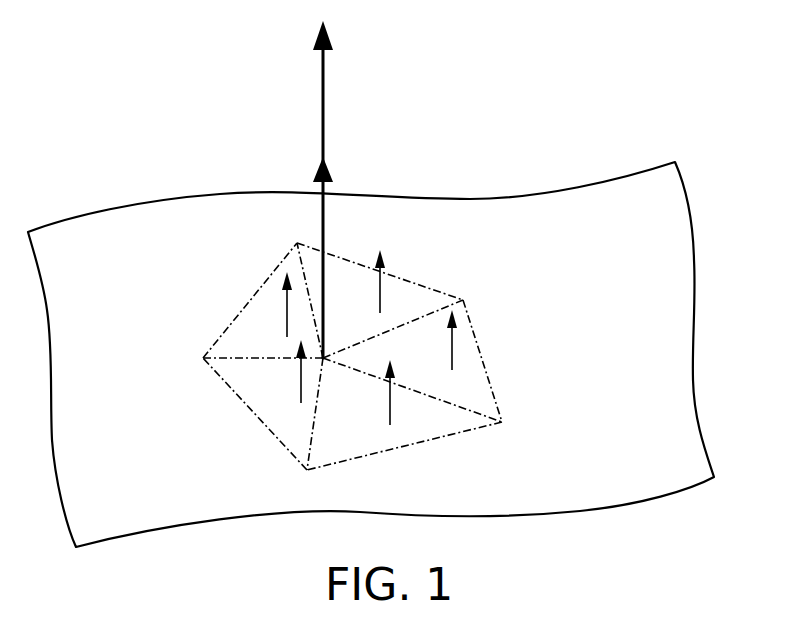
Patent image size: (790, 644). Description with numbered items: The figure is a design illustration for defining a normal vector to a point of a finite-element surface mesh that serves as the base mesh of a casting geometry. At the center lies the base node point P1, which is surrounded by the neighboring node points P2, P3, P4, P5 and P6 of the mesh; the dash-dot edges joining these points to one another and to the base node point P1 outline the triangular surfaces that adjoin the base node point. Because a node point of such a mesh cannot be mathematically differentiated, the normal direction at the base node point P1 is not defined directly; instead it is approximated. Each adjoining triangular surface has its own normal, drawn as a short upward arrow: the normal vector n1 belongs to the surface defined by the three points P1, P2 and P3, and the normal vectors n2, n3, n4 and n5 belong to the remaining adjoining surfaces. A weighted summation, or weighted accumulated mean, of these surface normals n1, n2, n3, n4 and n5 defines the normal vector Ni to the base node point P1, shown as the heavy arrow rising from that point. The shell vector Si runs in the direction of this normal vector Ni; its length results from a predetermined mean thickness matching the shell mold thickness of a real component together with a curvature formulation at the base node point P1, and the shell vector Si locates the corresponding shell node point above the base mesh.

The base node point P1 is at (335, 376).
The node point P2 is at (370, 279).
The node point P3 is at (413, 351).
The node point P4 is at (422, 414).
The node point P5 is at (263, 431).
The node point P6 is at (244, 309).
The normal vector of the surface n1 is at (364, 292).
The normal vector of the adjoining surface n2 is at (430, 352).
The normal vector of the adjoining surface n3 is at (369, 411).
The normal vector of the adjoining surface n4 is at (280, 391).
The normal vector of the adjoining surface n5 is at (265, 308).
The normal vector Ni is at (382, 158).
The shell vector Si is at (359, 17).